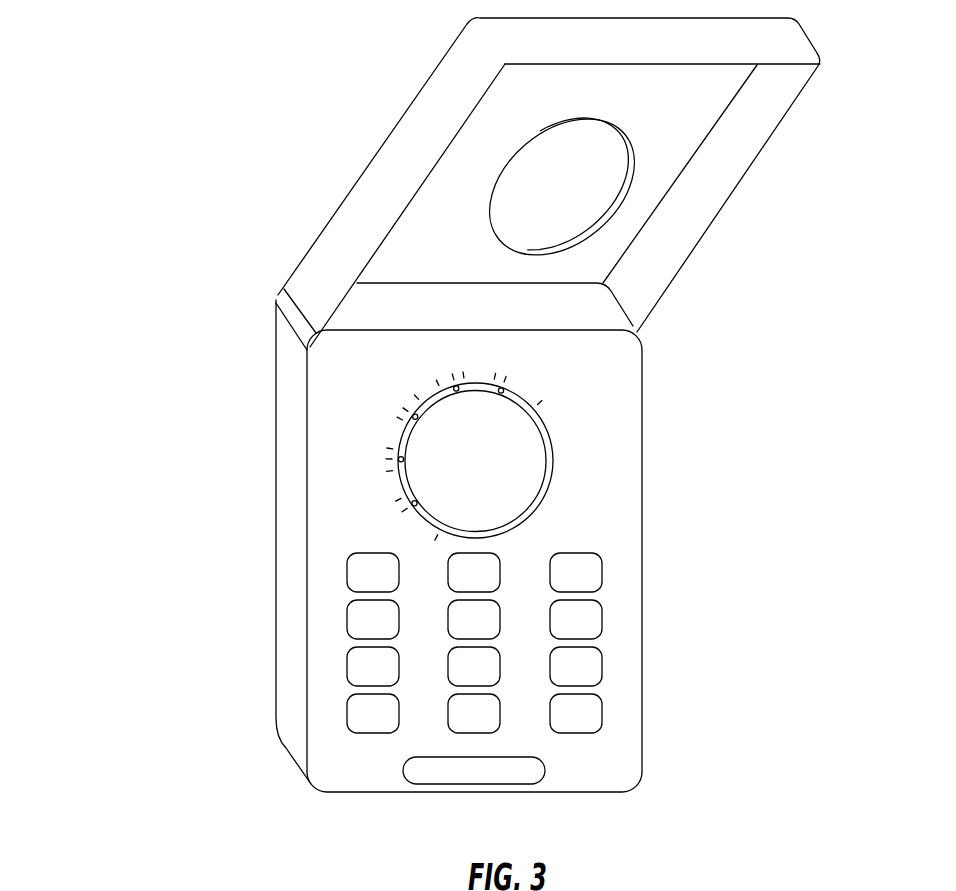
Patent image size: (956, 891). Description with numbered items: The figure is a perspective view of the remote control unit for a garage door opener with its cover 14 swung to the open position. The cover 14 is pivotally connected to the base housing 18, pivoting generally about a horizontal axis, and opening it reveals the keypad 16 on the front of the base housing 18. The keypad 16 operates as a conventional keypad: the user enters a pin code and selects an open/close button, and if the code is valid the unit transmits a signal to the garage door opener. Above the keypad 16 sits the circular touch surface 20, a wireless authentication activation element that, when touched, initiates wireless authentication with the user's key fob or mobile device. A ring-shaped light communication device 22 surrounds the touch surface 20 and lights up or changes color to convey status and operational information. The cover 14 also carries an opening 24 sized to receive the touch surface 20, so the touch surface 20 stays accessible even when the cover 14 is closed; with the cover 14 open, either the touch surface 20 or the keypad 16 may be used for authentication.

The cover 14 is at (390, 183).
The keypad 16 is at (343, 535).
The base housing 18 is at (292, 632).
The touch surface 20 is at (467, 475).
The light communication device 22 is at (405, 428).
The opening 24 is at (557, 170).